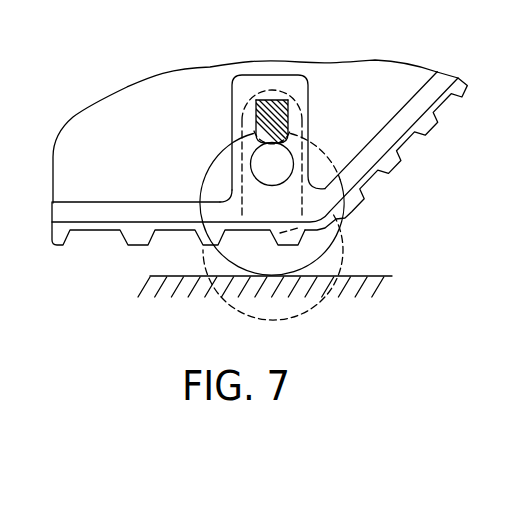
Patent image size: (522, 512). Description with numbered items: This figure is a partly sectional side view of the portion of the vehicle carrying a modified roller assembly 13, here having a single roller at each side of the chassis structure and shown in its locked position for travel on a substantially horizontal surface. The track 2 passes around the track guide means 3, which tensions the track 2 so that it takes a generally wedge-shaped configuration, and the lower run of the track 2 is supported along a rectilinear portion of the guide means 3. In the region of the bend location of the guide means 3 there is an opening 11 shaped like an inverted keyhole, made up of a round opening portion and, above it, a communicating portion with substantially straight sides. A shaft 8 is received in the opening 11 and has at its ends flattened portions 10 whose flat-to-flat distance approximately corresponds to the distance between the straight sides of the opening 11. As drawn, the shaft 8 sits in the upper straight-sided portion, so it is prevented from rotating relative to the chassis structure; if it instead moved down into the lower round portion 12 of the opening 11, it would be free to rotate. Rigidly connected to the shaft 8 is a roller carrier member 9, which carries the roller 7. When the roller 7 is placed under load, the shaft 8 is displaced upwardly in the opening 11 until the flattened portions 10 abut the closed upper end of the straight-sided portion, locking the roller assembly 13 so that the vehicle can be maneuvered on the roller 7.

The track 2 is at (67, 239).
The track guide means 3 is at (100, 212).
The roller 7 is at (312, 240).
The shaft 8 is at (281, 100).
The roller carrier member 9 is at (302, 197).
The flattened portions 10 is at (256, 117).
The opening 11 is at (263, 100).
The lower round portion of the opening 12 is at (250, 167).
The roller assembly 13 is at (333, 126).